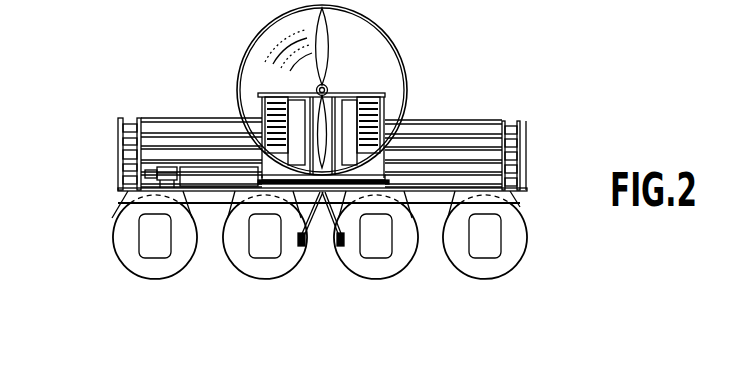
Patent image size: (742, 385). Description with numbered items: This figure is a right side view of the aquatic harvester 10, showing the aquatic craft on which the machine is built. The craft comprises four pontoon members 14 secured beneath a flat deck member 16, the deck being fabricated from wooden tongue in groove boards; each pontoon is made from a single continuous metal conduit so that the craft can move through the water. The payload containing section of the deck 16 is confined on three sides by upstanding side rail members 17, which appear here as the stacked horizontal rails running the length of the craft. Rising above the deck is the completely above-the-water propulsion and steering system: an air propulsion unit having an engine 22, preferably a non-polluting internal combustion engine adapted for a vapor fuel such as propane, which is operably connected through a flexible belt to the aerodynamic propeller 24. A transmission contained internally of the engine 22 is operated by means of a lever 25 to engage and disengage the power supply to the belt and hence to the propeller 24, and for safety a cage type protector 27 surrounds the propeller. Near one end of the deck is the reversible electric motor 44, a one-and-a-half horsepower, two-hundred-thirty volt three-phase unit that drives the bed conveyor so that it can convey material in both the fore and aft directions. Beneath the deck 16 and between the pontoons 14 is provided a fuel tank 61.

The aquatic harvester 10 is at (478, 96).
The pontoon members 14 is at (178, 254).
The flat deck member 16 is at (524, 191).
The upstanding side rail members 17 is at (173, 118).
The engine 22 is at (353, 108).
The aerodynamic propeller 24 is at (327, 55).
The lever 25 is at (378, 118).
The cage type protector 27 is at (391, 38).
The electric motor 44 is at (129, 186).
The fuel tank 61 is at (325, 236).